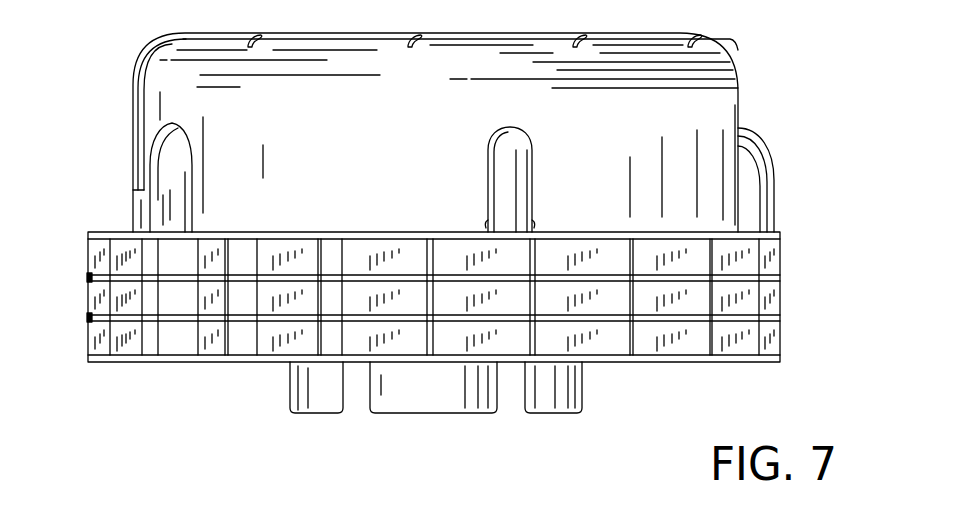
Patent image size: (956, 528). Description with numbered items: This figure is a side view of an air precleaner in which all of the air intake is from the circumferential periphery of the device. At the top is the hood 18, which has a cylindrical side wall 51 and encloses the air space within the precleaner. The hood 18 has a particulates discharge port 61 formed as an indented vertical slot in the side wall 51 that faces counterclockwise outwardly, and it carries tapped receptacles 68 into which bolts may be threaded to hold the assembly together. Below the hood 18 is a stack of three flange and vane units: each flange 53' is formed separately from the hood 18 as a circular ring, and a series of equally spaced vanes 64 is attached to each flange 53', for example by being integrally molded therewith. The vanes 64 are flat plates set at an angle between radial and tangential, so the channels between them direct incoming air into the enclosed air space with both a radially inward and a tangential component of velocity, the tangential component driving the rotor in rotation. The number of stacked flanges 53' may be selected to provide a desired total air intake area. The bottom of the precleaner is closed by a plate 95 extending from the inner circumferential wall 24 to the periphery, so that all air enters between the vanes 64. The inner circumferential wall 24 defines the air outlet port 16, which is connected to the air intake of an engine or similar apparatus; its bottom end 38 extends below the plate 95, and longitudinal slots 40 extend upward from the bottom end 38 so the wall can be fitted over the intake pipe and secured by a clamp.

The hood 18 is at (738, 90).
The particulates discharge port 61 is at (136, 120).
The cylindrical side wall 51 is at (692, 108).
The tapped receptacles 68 is at (533, 182).
The plate 95 is at (727, 363).
The flanges 53' is at (401, 286).
The vanes 64 is at (277, 338).
The bottom end of inner circumferential wall 38 is at (315, 415).
The longitudinal slots 40 is at (357, 402).
The air outlet port 16 is at (563, 415).
The inner circumferential wall 24 is at (582, 392).